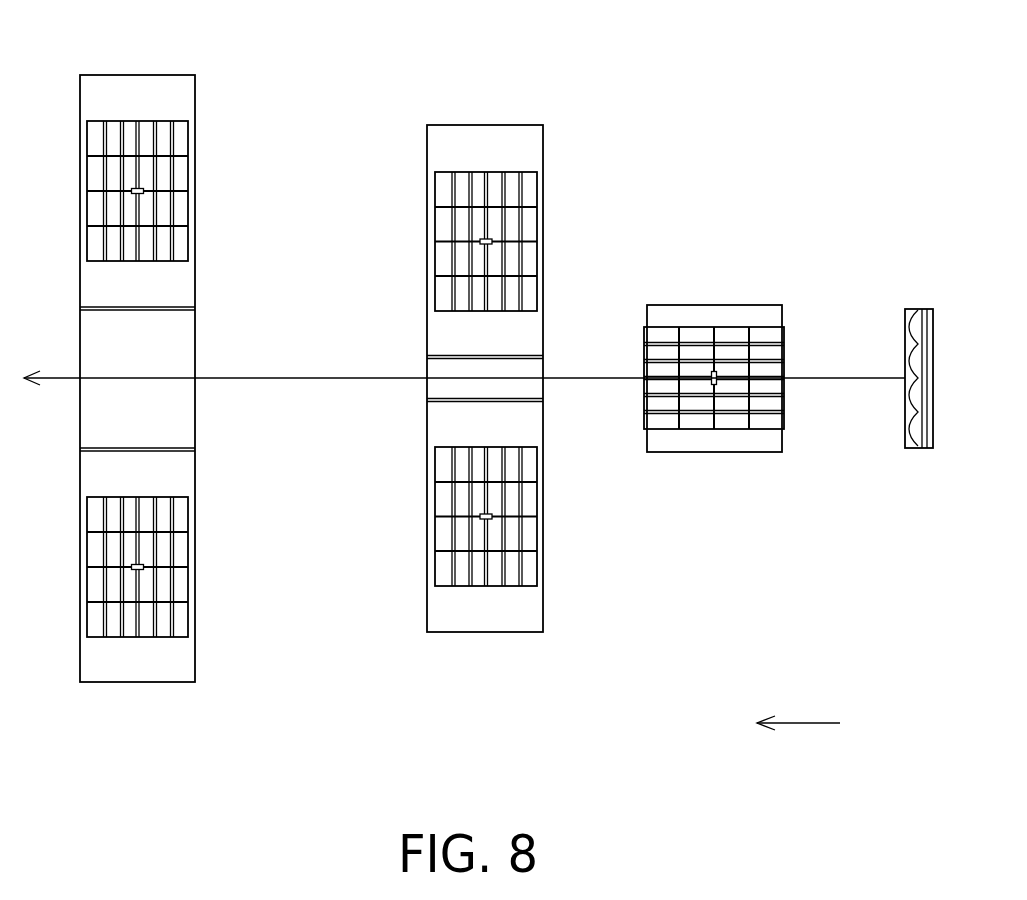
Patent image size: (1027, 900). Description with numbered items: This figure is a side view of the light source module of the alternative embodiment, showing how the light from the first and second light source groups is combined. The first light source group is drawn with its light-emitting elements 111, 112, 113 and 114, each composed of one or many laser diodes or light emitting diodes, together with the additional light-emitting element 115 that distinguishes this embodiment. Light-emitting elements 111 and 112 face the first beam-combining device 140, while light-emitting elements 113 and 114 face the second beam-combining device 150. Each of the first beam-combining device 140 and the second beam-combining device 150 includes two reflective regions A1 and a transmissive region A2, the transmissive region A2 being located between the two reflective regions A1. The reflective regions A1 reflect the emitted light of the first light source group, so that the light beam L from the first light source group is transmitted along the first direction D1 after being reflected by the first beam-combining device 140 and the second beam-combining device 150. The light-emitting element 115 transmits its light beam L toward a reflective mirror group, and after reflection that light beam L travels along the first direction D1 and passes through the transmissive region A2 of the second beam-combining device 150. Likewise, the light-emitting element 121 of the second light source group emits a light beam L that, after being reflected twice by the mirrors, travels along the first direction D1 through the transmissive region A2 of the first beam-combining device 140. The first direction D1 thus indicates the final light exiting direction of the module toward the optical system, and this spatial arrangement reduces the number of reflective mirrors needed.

The light-emitting element 111 is at (163, 130).
The light-emitting element 112 is at (163, 625).
The light-emitting element 113 is at (510, 181).
The light-emitting element 114 is at (510, 577).
The light-emitting element 115 is at (768, 339).
The light-emitting element 121 is at (926, 437).
The first beam-combining device 140 is at (198, 287).
The second beam-combining device 150 is at (427, 340).
The reflective region A1 is at (98, 96).
The transmissive region A2 is at (97, 342).
The light beam L is at (56, 380).
The first direction D1 is at (798, 740).